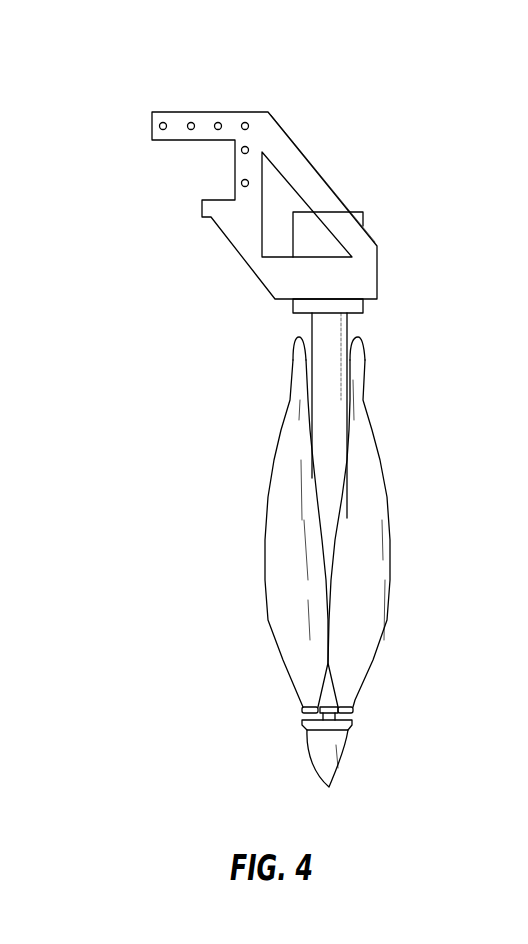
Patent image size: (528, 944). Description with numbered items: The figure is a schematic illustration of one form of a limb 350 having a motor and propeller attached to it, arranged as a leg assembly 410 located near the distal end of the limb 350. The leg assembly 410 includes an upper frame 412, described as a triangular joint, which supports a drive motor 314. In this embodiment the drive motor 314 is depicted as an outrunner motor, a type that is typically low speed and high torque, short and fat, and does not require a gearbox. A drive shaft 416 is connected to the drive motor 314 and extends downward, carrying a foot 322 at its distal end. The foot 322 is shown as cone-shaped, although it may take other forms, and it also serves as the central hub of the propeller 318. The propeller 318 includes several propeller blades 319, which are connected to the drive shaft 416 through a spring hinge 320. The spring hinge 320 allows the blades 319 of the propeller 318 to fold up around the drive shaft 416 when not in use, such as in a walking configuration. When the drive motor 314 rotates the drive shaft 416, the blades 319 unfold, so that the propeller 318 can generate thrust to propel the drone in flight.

The limb 350 is at (157, 71).
The upper frame 412 is at (293, 143).
The drive motor 314 is at (315, 243).
The leg assembly 410 is at (425, 392).
The drive shaft 416 is at (328, 390).
The propeller 318 is at (365, 522).
The propeller blades 319 is at (288, 592).
The spring hinge 320 is at (358, 712).
The foot 322 is at (340, 770).